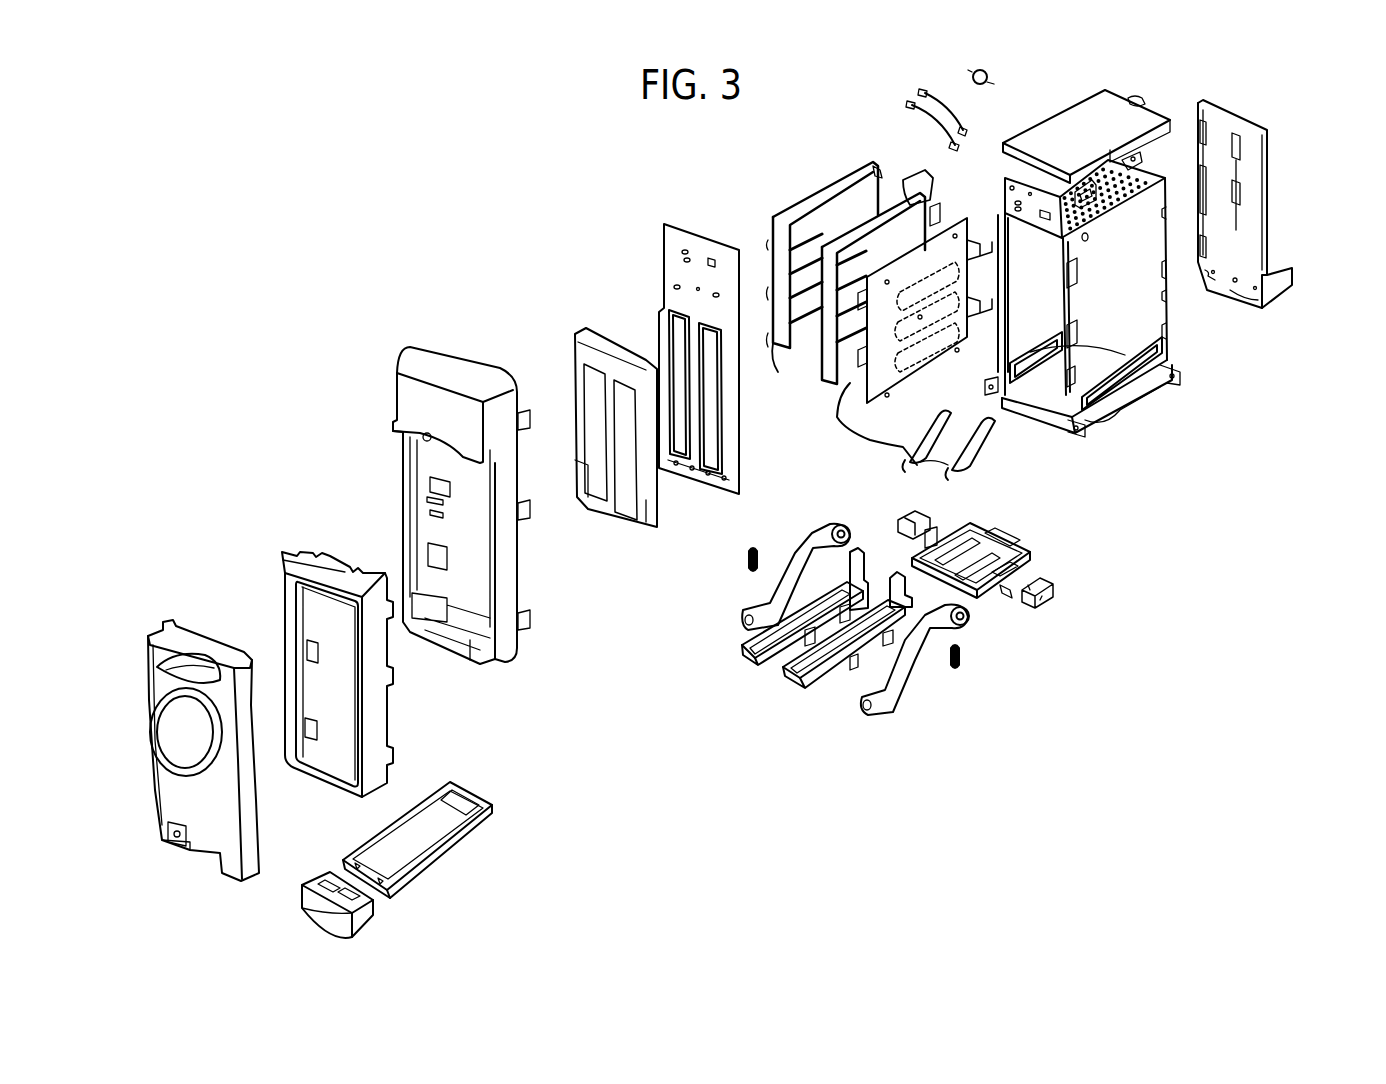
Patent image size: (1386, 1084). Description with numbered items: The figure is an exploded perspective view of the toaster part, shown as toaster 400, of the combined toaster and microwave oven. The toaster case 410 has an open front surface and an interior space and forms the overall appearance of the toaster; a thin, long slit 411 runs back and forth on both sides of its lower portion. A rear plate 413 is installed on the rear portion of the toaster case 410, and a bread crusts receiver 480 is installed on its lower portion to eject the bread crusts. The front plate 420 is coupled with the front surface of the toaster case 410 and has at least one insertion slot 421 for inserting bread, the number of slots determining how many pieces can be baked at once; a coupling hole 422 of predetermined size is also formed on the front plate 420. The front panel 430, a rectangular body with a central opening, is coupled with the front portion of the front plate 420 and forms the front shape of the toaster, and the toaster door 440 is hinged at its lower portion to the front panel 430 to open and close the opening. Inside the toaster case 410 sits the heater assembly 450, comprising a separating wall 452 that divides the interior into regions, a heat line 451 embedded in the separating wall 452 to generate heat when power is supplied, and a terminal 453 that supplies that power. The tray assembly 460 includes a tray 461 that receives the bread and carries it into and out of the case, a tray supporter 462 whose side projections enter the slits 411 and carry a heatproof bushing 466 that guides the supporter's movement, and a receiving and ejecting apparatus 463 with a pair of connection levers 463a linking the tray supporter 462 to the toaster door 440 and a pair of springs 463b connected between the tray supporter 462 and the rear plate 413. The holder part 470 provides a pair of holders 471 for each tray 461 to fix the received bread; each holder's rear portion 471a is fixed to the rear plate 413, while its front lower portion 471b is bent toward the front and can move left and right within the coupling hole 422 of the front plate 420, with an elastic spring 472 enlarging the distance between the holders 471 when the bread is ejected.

The battery pack assembly 400 is at (352, 200).
The toaster case 410 is at (1118, 263).
The slit 411 is at (1120, 368).
The rear plate 413 is at (1268, 222).
The front plate 420 is at (662, 393).
The inner frame 421 is at (622, 404).
The coupling hole 422 is at (716, 484).
The front panel 430 is at (443, 357).
The toaster door 440 is at (160, 612).
The heater assembly 450 is at (814, 186).
The heat line 451 is at (927, 282).
The separating wall 452 is at (873, 195).
The terminal 453 is at (984, 243).
The tray assembly 460 is at (931, 652).
The tray 461 is at (752, 665).
The tray supporter 462 is at (1010, 542).
The receiving and ejecting apparatus 463 is at (863, 660).
The lever arm 463a is at (888, 703).
The springs 463b is at (860, 634).
The bushing 466 is at (1052, 584).
The holder part 470 is at (870, 440).
The holder 471 is at (776, 256).
The rear portion of the holder 471a is at (903, 270).
The front lower portion of the holder 471b is at (776, 345).
The elastic spring 472 is at (985, 432).
The bread crusts receiver 480 is at (442, 848).